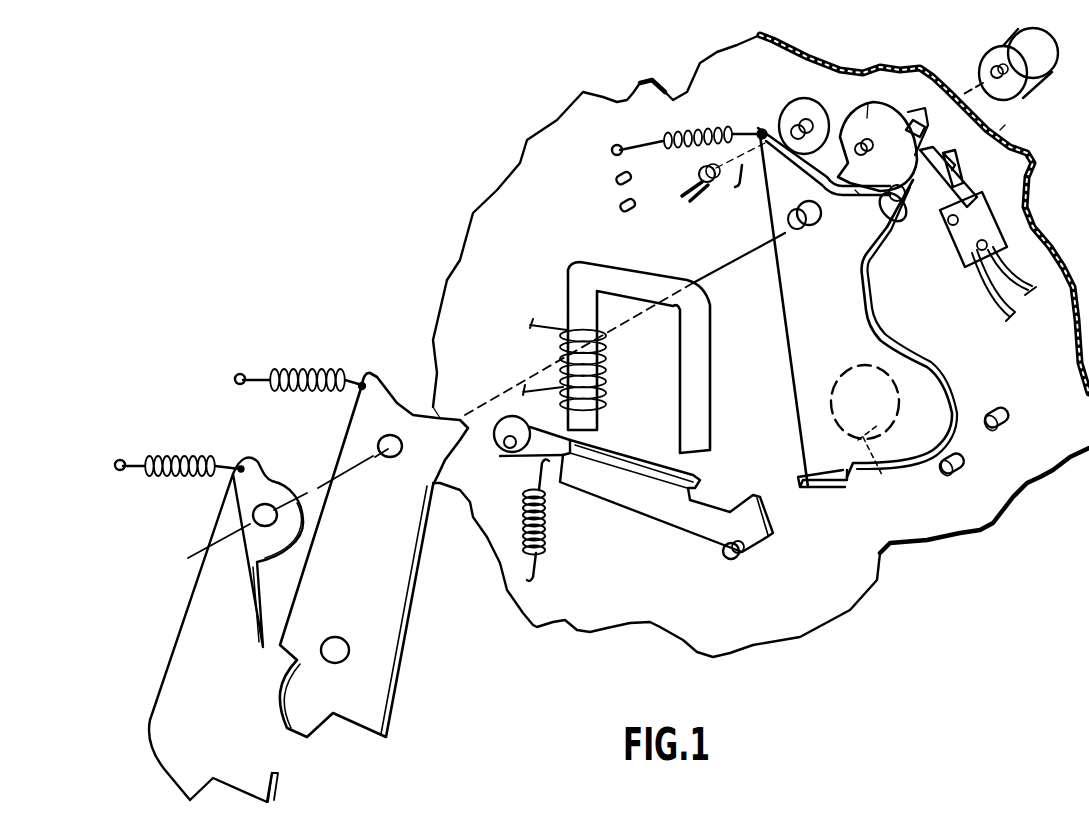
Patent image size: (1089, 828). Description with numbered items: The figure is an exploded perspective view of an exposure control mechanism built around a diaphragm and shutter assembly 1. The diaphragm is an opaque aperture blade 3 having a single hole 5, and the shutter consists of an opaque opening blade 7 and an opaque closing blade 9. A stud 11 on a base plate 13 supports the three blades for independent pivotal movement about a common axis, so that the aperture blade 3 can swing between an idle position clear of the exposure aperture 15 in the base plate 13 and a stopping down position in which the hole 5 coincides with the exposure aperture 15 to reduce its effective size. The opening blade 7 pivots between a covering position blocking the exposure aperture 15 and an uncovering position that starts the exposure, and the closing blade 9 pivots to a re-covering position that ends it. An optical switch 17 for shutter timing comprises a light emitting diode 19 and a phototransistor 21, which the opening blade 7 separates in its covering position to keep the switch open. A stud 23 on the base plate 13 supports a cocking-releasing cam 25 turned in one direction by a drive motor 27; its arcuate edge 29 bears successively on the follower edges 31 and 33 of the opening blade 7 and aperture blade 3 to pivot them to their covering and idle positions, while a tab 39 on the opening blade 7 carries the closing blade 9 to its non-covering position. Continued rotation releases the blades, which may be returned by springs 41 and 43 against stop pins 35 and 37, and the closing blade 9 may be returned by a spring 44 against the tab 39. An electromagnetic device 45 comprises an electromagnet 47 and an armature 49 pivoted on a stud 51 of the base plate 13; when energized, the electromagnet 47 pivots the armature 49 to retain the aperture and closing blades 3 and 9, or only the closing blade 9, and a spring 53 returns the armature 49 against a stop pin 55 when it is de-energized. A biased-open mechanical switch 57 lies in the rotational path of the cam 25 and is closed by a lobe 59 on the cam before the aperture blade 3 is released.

The diaphragm and shutter assembly 1 is at (158, 595).
The aperture blade 3 is at (395, 580).
The hole 5 is at (330, 655).
The opening blade 7 is at (840, 283).
The closing blade 9 is at (262, 775).
The stud 11 is at (808, 230).
The base plate 13 is at (760, 643).
The exposure aperture 15 is at (870, 462).
The optical switch 17 is at (742, 185).
The light emitting diode 19 is at (703, 168).
The phototransistor 21 is at (775, 115).
The stud 23 is at (855, 148).
The cocking-releasing cam 25 is at (867, 118).
The drive motor 27 is at (1010, 40).
The arcuate edge 29 is at (886, 216).
The follower edge 31 is at (858, 195).
The follower edge 33 is at (440, 415).
The stop pin 35 is at (990, 430).
The stop pin 37 is at (945, 475).
The tab 39 is at (815, 490).
The spring 41 is at (282, 368).
The spring 43 is at (673, 130).
The spring 44 is at (150, 452).
The electromagnetic device 45 is at (548, 300).
The electromagnet 47 is at (580, 268).
The armature 49 is at (613, 492).
The stud 51 is at (505, 448).
The spring 53 is at (548, 545).
The stop pin 55 is at (725, 560).
The mechanical switch 57 is at (990, 120).
The lobe 59 is at (933, 200).